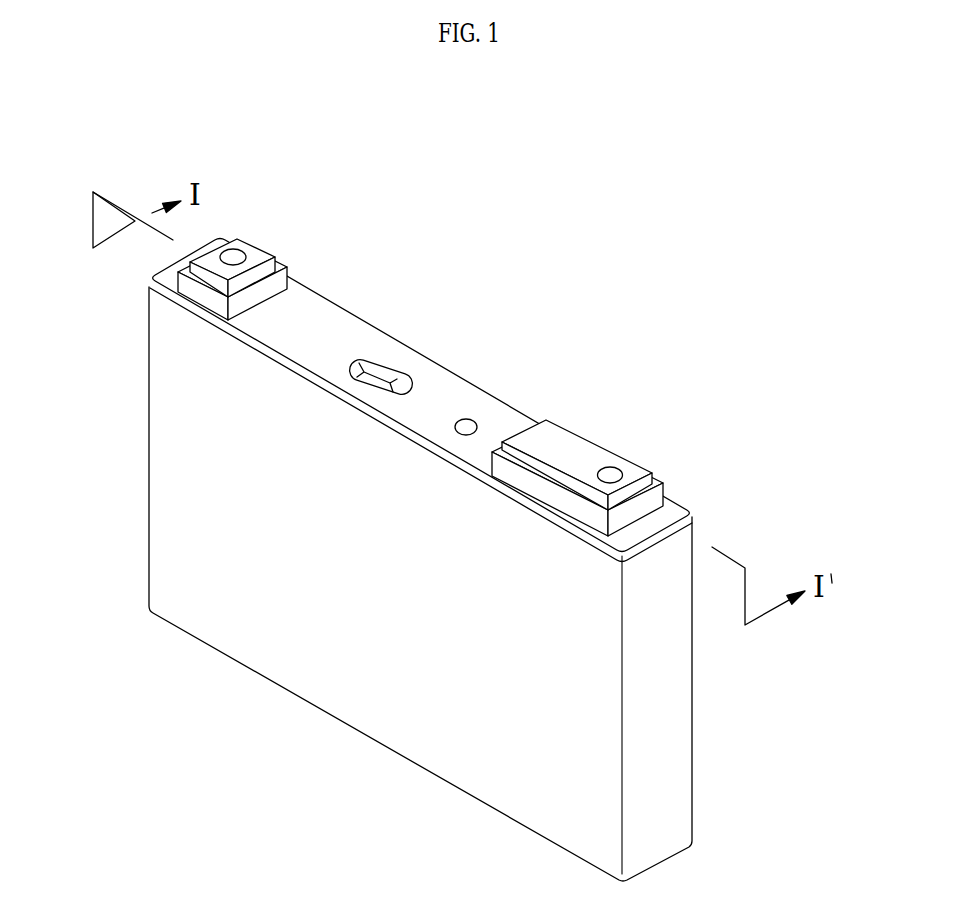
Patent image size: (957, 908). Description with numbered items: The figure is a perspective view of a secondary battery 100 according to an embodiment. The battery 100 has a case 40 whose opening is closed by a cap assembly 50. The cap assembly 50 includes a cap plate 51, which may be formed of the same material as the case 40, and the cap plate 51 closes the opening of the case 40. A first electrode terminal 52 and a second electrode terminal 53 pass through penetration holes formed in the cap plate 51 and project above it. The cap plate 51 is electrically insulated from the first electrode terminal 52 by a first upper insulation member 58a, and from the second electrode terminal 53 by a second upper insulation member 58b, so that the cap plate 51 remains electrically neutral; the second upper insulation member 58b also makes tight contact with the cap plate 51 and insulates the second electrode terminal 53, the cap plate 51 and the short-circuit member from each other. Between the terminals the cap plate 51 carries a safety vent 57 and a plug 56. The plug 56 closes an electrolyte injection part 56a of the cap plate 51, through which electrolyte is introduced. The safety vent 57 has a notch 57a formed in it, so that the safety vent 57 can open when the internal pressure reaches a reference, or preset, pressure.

The secondary battery 100 is at (443, 514).
The case 40 is at (365, 720).
The cap assembly 50 is at (443, 371).
The cap plate 51 is at (333, 322).
The first electrode terminal 52 is at (237, 257).
The second electrode terminal 53 is at (615, 469).
The plug 56 is at (526, 386).
The electrolyte injection part 56a is at (477, 427).
The safety vent 57 is at (423, 336).
The notch 57a is at (392, 382).
The first upper insulation member 58a is at (267, 250).
The second upper insulation member 58b is at (614, 464).